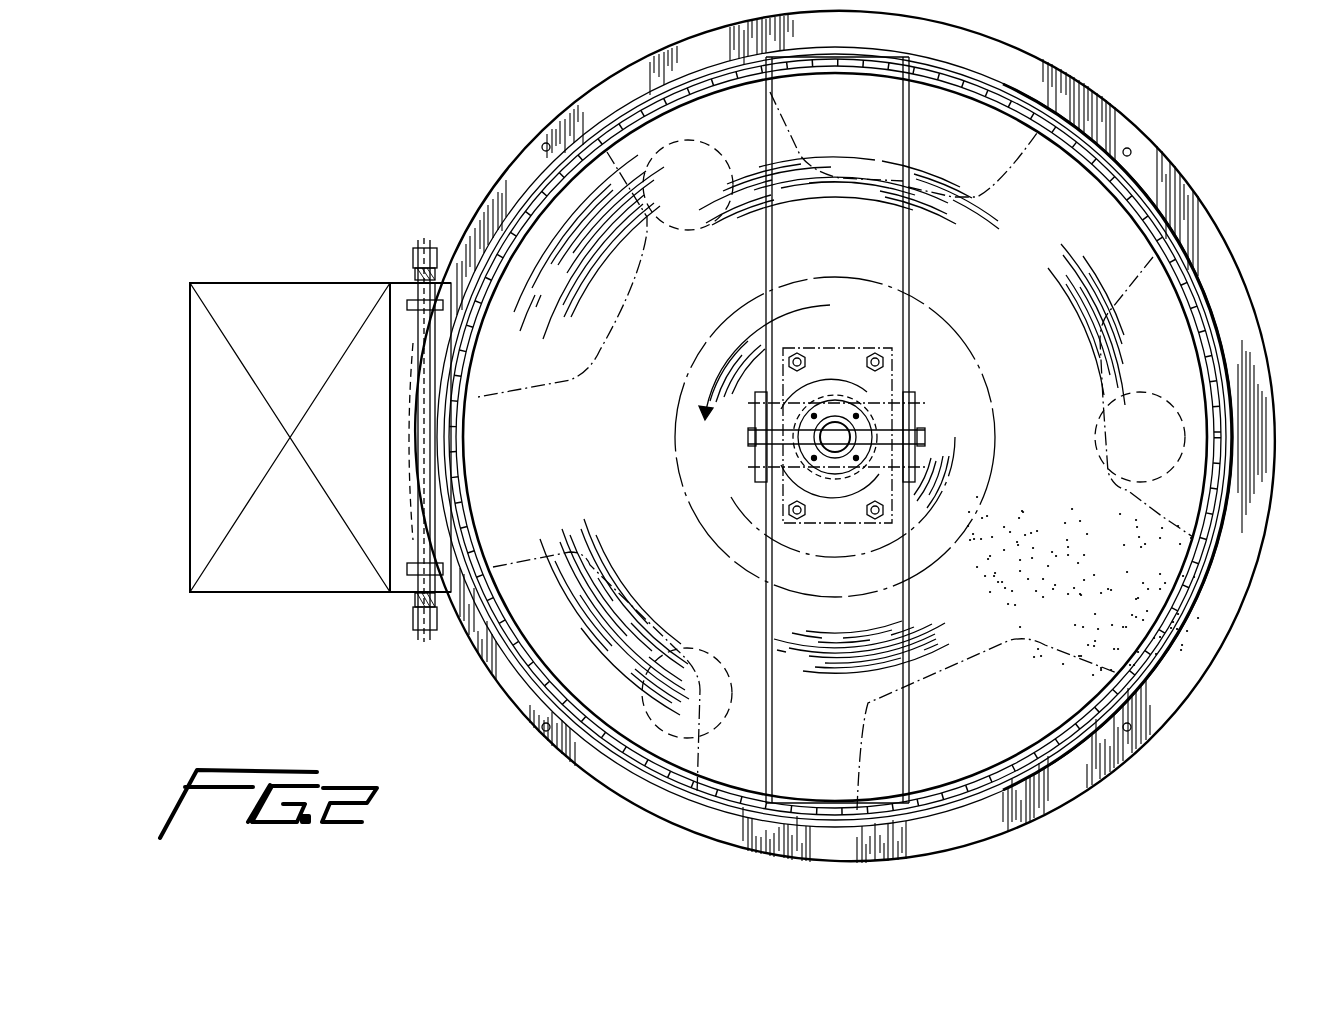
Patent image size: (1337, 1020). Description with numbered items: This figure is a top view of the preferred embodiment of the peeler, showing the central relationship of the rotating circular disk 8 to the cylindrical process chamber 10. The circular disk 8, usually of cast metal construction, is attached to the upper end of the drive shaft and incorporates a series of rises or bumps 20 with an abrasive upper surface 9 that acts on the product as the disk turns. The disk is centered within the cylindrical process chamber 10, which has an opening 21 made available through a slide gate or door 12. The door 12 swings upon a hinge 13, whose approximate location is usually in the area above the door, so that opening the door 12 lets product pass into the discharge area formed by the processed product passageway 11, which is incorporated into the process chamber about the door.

The circular disk 8 is at (997, 318).
The abrasive upper surface 9 is at (1107, 617).
The cylindrical process chamber 10 is at (610, 752).
The processed product passageway 11 is at (190, 545).
The slide gate or door 12 is at (451, 282).
The hinge 13 is at (418, 493).
The rises or bumps 20 is at (1160, 352).
The opening 21 is at (532, 452).